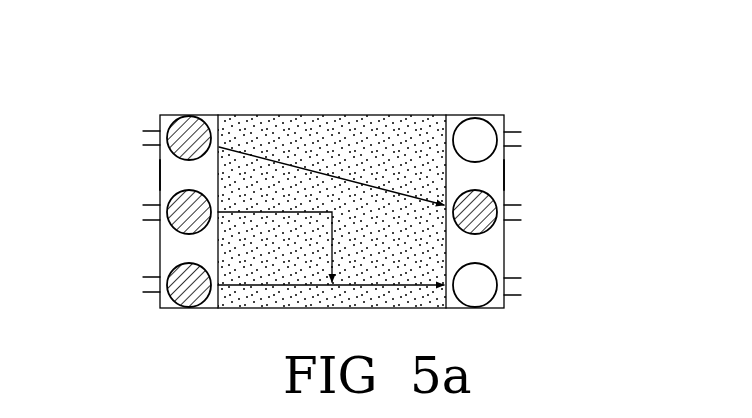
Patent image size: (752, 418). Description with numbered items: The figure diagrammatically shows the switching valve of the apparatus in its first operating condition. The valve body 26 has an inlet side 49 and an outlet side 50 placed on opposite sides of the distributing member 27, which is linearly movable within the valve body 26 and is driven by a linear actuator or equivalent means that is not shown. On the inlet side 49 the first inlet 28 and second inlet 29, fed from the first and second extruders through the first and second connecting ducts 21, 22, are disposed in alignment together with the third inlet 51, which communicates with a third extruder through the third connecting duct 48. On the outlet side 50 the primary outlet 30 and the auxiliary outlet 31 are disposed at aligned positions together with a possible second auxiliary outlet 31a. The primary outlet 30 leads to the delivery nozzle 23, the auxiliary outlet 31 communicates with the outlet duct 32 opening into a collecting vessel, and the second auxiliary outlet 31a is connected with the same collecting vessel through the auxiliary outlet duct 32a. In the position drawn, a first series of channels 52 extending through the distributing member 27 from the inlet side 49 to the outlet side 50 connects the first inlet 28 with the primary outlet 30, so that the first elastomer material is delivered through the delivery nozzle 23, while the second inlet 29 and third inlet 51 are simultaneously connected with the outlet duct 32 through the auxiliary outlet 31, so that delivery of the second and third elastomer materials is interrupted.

The first connecting duct 21 is at (150, 137).
The second connecting duct 22 is at (152, 286).
The delivery nozzle 23 is at (522, 215).
The valve body 26 is at (209, 110).
The distributing member 27 is at (380, 125).
The first inlet 28 is at (184, 130).
The second inlet 29 is at (180, 300).
The primary outlet 30 is at (482, 222).
The auxiliary outlet 31 is at (477, 297).
The second auxiliary outlet 31a is at (477, 130).
The outlet duct 32 is at (504, 287).
The auxiliary outlet duct 32a is at (510, 138).
The third connecting duct 48 is at (148, 210).
The inlet side 49 is at (160, 178).
The outlet side 50 is at (504, 175).
The third inlet 51 is at (180, 226).
The first series of channels 52 is at (310, 163).